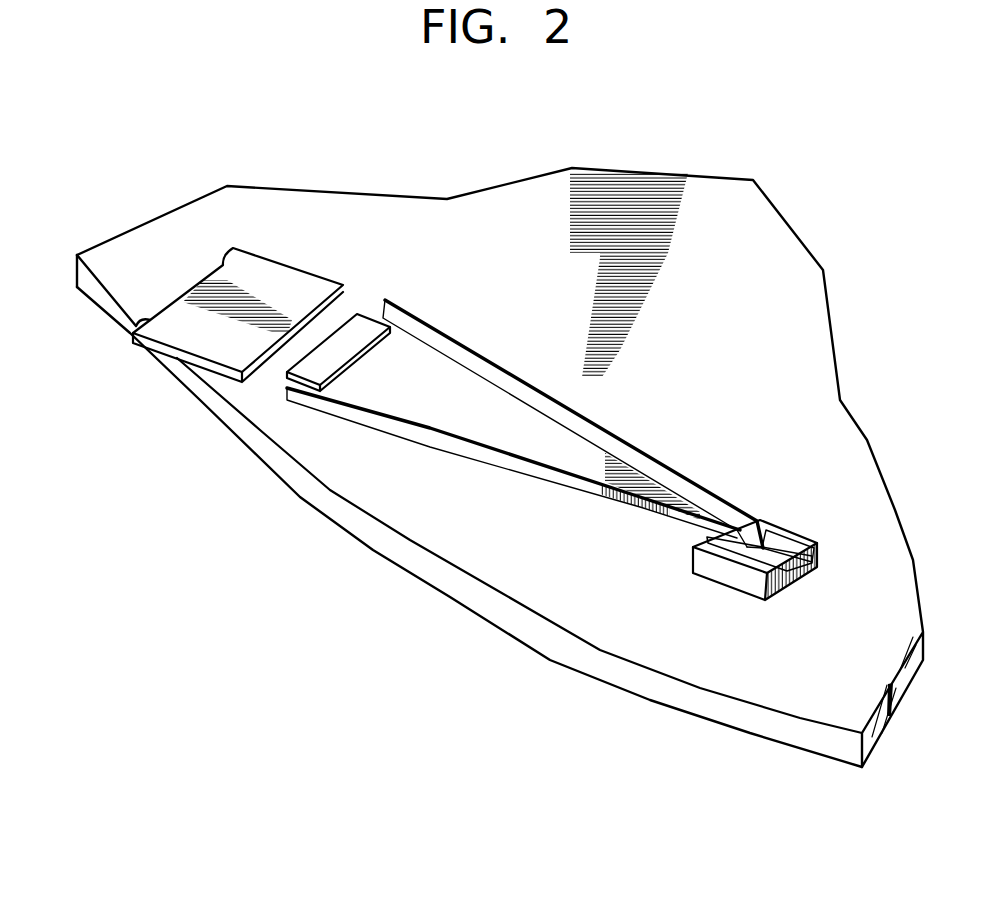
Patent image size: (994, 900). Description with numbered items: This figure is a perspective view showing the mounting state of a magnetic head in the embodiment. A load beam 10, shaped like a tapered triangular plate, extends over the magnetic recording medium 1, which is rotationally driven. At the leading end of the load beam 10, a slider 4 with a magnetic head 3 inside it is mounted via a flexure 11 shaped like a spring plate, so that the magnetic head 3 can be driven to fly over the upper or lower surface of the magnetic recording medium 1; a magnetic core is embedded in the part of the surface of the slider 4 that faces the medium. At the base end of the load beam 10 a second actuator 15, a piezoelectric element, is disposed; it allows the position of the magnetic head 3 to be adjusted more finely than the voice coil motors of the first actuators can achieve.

The magnetic recording medium 1 is at (478, 530).
The magnetic head 3 is at (712, 585).
The slider 4 is at (803, 563).
The load beam 10 is at (473, 387).
The flexure 11 is at (783, 552).
The second actuator 15 is at (365, 330).